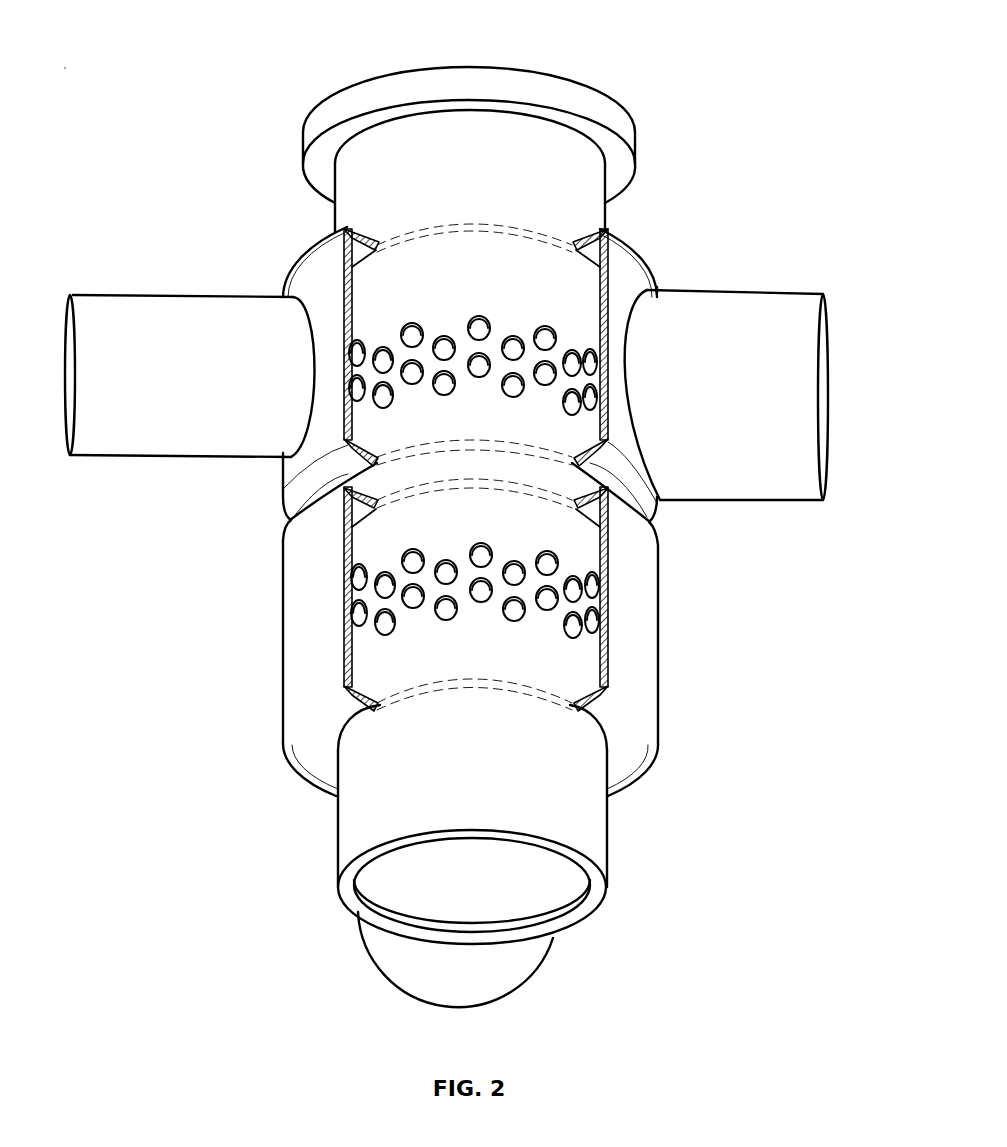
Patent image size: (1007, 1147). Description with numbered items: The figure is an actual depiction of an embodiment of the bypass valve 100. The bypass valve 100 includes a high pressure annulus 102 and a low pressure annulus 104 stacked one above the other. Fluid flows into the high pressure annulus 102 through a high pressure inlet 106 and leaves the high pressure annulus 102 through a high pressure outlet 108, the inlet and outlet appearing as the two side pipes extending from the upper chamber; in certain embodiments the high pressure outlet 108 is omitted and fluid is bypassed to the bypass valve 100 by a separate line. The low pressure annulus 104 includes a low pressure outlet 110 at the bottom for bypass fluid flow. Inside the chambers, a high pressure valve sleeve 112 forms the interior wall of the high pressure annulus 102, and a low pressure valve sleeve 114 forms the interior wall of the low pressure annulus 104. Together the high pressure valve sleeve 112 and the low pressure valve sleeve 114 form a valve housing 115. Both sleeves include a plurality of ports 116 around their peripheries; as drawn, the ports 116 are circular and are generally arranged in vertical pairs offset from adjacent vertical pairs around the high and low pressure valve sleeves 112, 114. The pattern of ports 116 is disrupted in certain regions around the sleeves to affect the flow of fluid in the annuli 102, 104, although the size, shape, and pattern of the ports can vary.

The bypass valve 100 is at (207, 61).
The high pressure annulus 102 is at (310, 248).
The low pressure annulus 104 is at (627, 760).
The high pressure inlet 106 is at (750, 300).
The high pressure outlet 108 is at (147, 300).
The low pressure outlet 110 is at (397, 970).
The high pressure valve sleeve 112 is at (460, 270).
The low pressure valve sleeve 114 is at (463, 660).
The valve housing 115 is at (587, 192).
The ports 116 is at (383, 350).